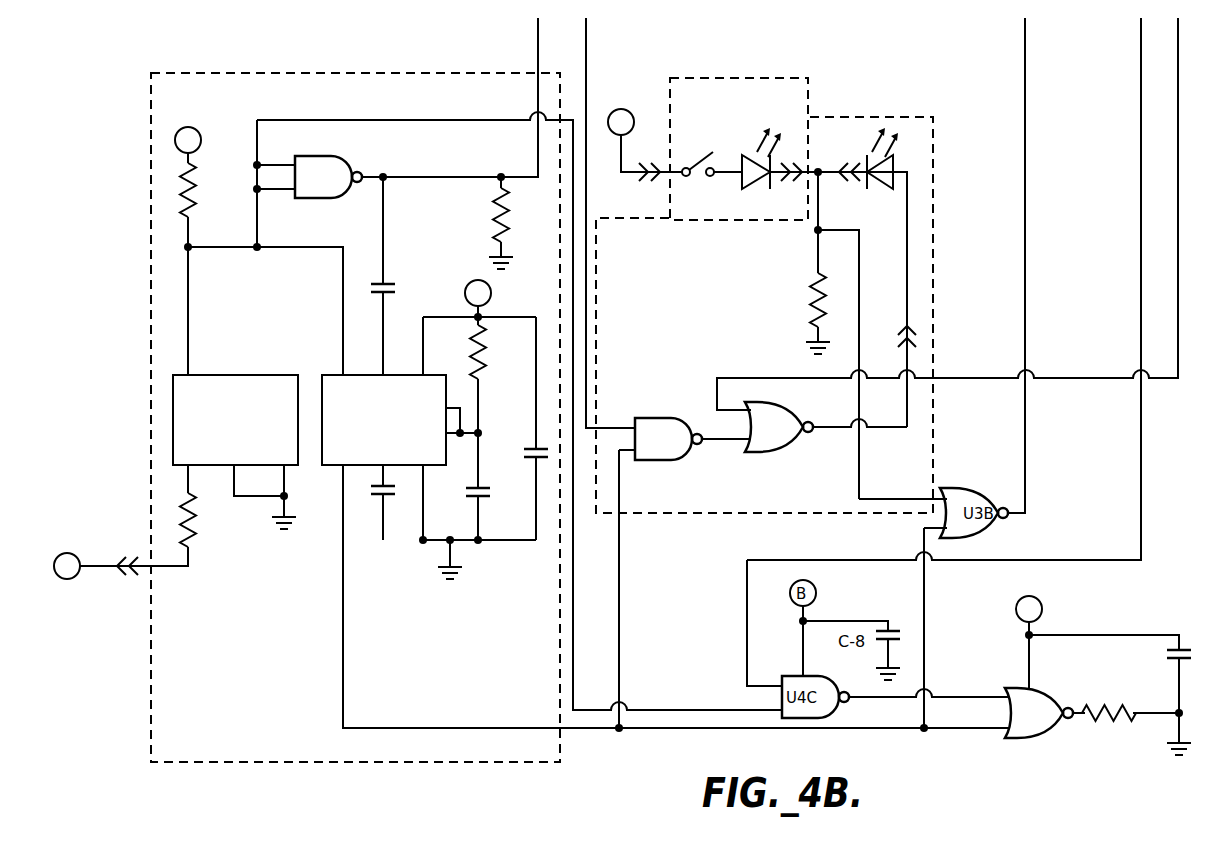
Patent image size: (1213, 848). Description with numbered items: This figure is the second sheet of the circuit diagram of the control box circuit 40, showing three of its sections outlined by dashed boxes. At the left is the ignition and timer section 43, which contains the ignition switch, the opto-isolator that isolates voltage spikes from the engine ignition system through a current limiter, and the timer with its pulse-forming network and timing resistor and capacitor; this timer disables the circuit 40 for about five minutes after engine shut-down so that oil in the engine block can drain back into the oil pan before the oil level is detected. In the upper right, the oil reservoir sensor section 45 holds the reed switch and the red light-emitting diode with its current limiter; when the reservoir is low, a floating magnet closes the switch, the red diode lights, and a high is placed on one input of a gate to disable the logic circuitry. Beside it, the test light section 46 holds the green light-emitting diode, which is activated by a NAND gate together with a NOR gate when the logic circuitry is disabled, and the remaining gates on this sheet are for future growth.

The circuit 40 is at (997, 752).
The ignition and timer section 43 is at (230, 73).
The oil reservoir sensor section 45 is at (748, 77).
The test light section 46 is at (853, 112).